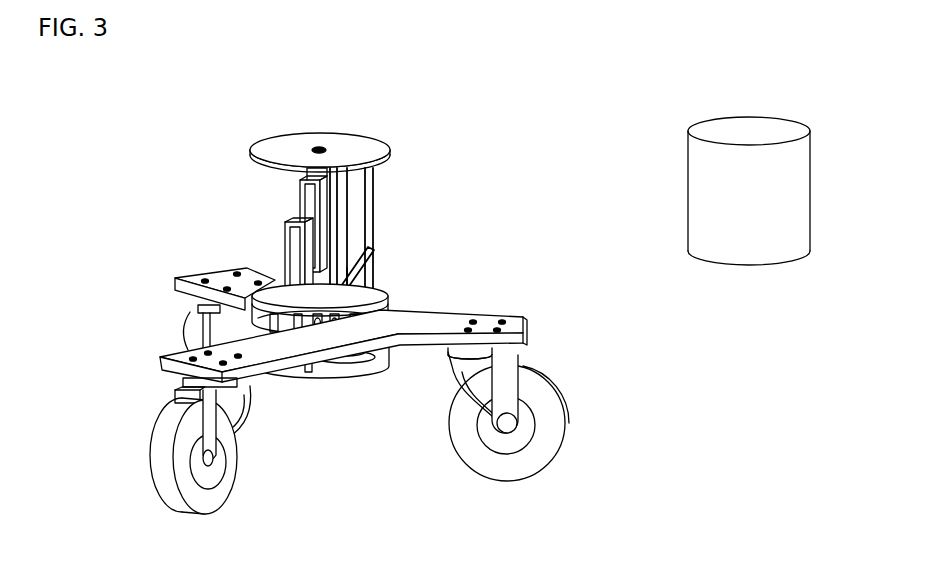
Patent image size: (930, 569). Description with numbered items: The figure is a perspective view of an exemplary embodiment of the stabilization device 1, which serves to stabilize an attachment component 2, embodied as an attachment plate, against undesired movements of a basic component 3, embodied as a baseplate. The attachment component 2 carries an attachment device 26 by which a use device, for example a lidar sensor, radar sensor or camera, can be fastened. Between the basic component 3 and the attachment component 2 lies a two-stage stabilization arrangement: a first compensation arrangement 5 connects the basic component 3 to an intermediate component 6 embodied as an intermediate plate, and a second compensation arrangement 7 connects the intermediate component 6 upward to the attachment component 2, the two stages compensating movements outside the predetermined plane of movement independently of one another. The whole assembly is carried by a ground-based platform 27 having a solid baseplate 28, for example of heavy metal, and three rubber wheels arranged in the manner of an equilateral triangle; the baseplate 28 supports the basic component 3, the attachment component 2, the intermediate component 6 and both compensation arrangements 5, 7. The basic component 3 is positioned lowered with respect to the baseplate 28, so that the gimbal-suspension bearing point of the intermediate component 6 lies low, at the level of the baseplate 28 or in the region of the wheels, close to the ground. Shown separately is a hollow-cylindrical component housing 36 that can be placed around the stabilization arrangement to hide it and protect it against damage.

The stabilization device 1 is at (462, 156).
The attachment component 2 is at (316, 127).
The basic component 3 is at (332, 380).
The first compensation arrangement 5 is at (399, 360).
The intermediate component 6 is at (374, 296).
The second compensation arrangement 7 is at (385, 231).
The attachment device 26 is at (326, 147).
The platform 27 is at (292, 353).
The baseplate 28 is at (200, 353).
The component housing 36 is at (688, 190).